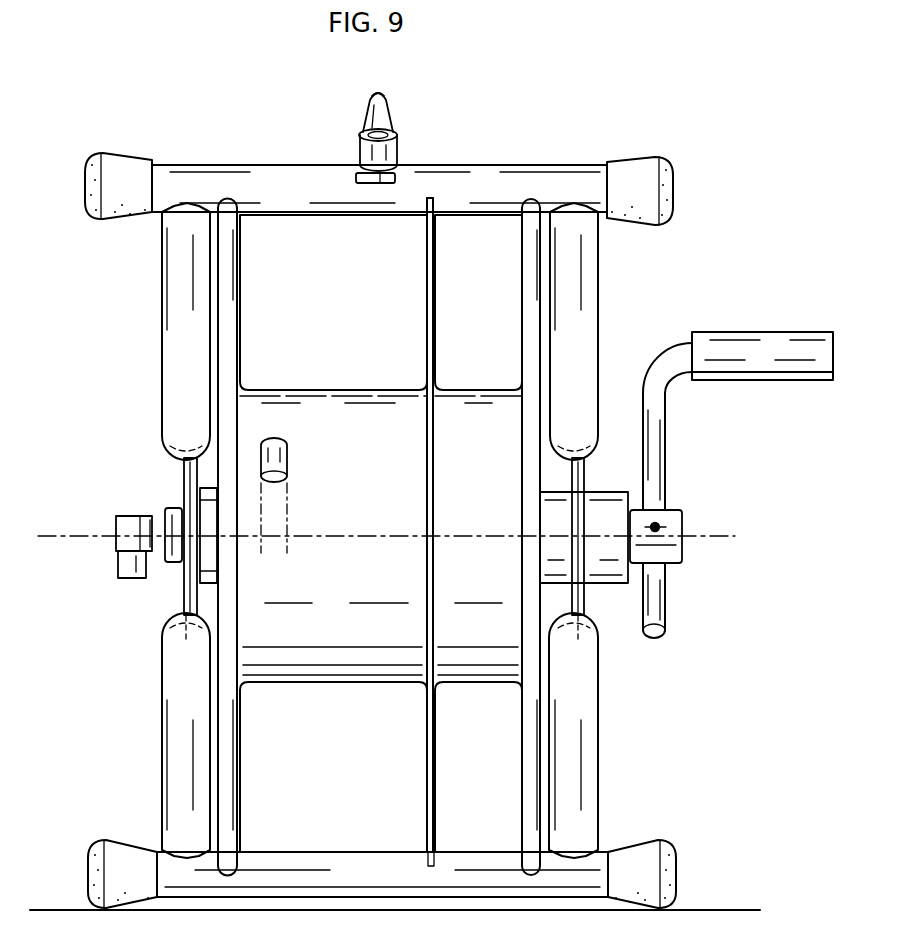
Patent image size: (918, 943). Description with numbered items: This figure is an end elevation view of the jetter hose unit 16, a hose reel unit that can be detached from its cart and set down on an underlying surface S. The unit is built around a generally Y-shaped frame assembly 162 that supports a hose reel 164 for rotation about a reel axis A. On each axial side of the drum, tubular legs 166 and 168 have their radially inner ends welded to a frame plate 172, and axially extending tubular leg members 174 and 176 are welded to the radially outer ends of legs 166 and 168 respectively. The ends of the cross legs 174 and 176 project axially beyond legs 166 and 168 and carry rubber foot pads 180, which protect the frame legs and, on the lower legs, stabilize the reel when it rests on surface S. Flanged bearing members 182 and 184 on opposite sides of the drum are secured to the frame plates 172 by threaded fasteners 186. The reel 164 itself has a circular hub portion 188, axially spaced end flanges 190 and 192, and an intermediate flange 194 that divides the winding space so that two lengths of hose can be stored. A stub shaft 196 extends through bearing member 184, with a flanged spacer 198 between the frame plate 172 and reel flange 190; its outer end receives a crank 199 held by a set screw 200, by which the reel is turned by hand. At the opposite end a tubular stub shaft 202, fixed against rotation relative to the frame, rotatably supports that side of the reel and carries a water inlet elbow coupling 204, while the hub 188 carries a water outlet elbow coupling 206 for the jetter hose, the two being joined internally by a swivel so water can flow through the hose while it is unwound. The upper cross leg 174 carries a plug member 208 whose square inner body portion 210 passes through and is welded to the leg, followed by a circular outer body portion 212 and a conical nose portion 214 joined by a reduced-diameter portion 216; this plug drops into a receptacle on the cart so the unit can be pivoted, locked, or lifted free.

The jetter hose unit 16 is at (160, 137).
The frame assembly 162 is at (357, 537).
The hose reel 164 is at (548, 262).
The tubular leg 166 is at (180, 303).
The tubular leg 168 is at (178, 738).
The frame plate 172 is at (182, 592).
The tubular leg member 174 is at (482, 172).
The tubular leg member 176 is at (316, 868).
The rubber foot pad 180 is at (120, 170).
The flanged bearing member 182 is at (183, 492).
The flanged bearing member 184 is at (625, 570).
The threaded fastener 186 is at (170, 512).
The hub portion 188 is at (350, 684).
The end flange 190 is at (522, 320).
The end flange 192 is at (230, 332).
The flange 194 is at (427, 323).
The stub shaft 196 is at (683, 528).
The flanged spacer 198 is at (545, 567).
The crank 199 is at (790, 345).
The set screw 200 is at (680, 525).
The tubular stub shaft 202 is at (153, 582).
The water inlet elbow coupling 204 is at (122, 523).
The water outlet elbow coupling 206 is at (290, 458).
The plug member 208 is at (382, 156).
The inner body portion 210 is at (378, 185).
The outer body portion 212 is at (358, 150).
The conical nose portion 214 is at (393, 107).
The portion of reduced diameter 216 is at (373, 125).
The reel axis A is at (355, 535).
The underlying surface S is at (708, 906).